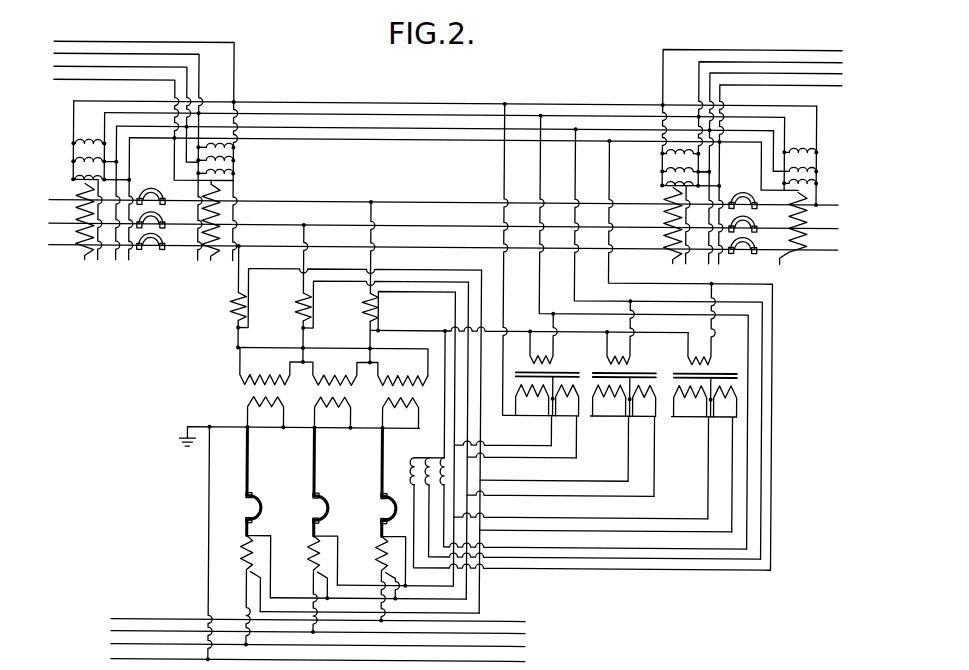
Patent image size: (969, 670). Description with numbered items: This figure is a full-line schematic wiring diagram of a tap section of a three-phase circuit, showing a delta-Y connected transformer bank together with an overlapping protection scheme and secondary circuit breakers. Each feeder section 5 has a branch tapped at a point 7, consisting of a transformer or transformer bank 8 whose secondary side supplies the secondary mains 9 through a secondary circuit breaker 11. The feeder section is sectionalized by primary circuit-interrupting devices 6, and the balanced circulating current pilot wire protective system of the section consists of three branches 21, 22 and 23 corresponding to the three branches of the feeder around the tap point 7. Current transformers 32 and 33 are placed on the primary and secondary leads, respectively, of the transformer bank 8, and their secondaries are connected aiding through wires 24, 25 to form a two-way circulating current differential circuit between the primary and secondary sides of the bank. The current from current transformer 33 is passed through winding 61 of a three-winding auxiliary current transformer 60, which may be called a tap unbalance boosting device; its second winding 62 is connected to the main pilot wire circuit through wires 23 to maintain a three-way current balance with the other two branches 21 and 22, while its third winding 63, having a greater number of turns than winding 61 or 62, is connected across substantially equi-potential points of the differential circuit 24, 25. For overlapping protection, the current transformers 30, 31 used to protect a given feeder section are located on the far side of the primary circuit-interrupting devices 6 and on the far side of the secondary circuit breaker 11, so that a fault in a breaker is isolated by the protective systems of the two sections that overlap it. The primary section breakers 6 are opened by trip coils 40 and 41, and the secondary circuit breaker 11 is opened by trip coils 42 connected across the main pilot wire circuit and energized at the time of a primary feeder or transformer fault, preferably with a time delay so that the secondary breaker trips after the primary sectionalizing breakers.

The feeder section 5 is at (440, 226).
The primary circuit-interrupting device 6 is at (149, 254).
The tap point 7 is at (370, 202).
The transformer or transformer bank 8 is at (246, 398).
The secondary mains 9 is at (177, 661).
The secondary circuit breaker 11 is at (247, 509).
The pilot wire branch 21 is at (392, 103).
The pilot wire branch 22 is at (130, 44).
The pilot wire branch wires 23 is at (503, 166).
The differential circuit wire 24 is at (448, 271).
The differential circuit wire 25 is at (470, 603).
The current transformer 30 is at (96, 235).
The current transformer 31 is at (206, 190).
The current transformer 32 is at (246, 314).
The current transformer 33 is at (246, 552).
The trip coil 40 is at (72, 182).
The trip coil 41 is at (226, 176).
The trip coils 42 is at (445, 458).
The three-winding auxiliary current transformer 60 is at (620, 407).
The winding 61 is at (644, 397).
The second winding 62 is at (623, 324).
The third winding 63 is at (611, 400).